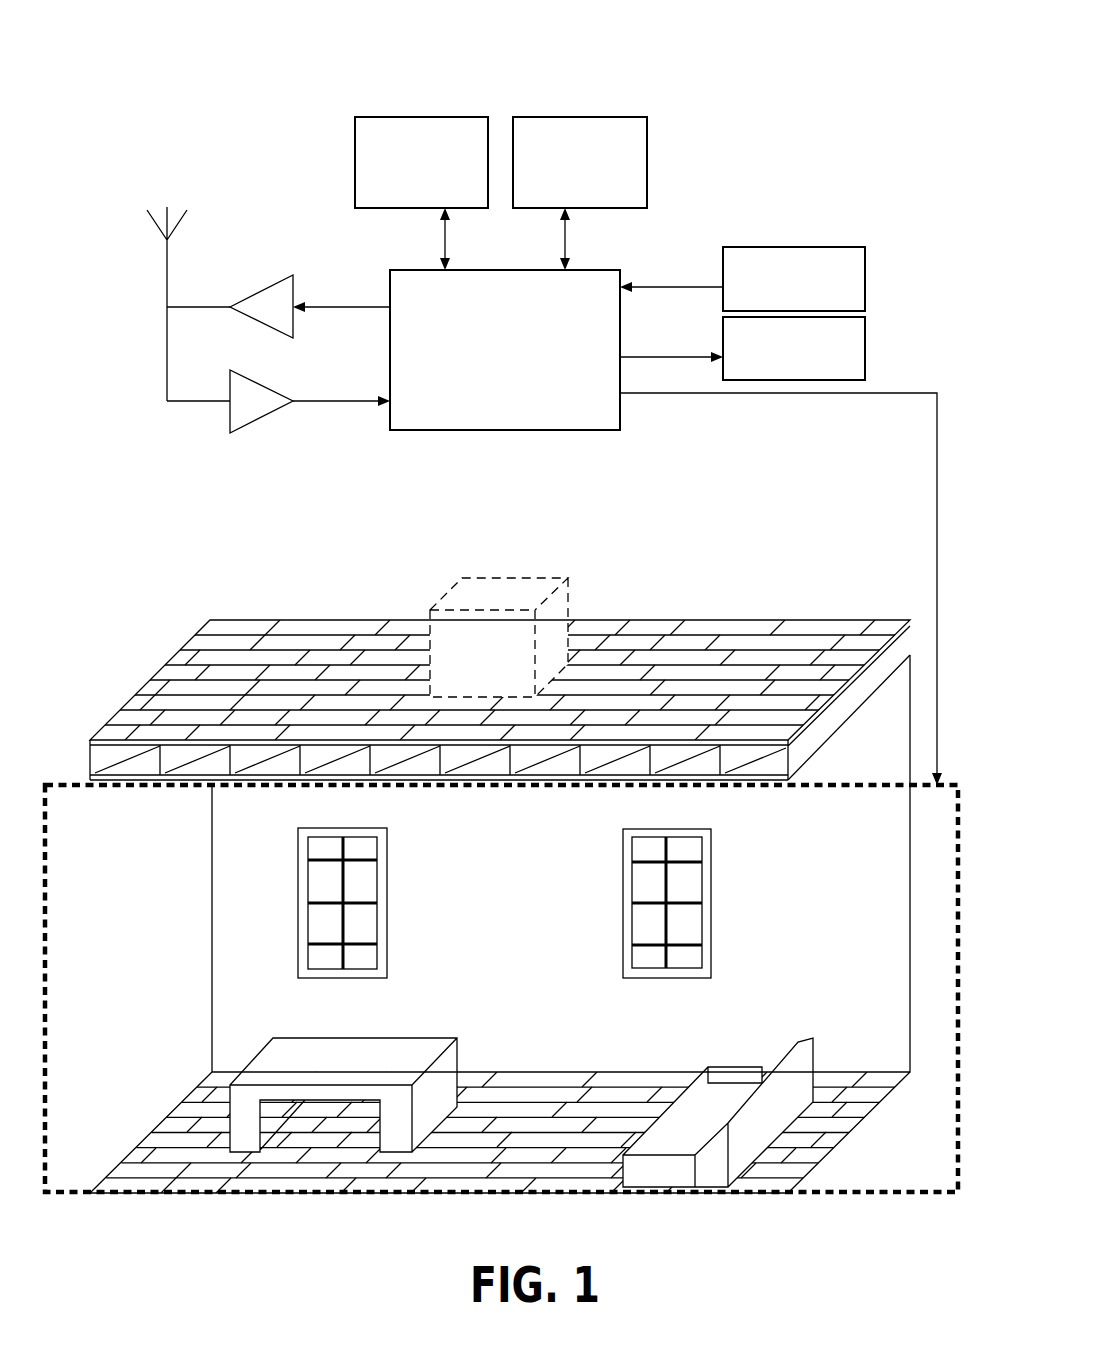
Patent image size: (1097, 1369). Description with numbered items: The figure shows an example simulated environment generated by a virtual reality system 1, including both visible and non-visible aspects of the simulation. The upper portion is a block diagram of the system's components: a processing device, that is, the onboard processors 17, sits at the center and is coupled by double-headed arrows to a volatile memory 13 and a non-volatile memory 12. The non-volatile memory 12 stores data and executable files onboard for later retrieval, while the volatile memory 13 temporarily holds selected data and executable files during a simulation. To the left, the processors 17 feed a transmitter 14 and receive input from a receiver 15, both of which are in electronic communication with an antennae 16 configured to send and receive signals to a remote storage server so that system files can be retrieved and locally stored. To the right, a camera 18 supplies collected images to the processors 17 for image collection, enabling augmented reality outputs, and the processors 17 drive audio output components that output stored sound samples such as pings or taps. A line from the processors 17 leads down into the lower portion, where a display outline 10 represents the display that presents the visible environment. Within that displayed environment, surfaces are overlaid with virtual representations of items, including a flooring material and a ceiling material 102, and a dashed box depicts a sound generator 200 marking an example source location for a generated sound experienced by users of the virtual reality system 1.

The virtual reality system 1 is at (213, 101).
The display 10 is at (501, 973).
The non-volatile memory 12 is at (615, 116).
The volatile memory 13 is at (408, 116).
The transmitter 14 is at (260, 325).
The receiver 15 is at (268, 385).
The antennae 16 is at (157, 227).
The onboard processors 17 is at (443, 431).
The camera 18 is at (865, 282).
The ceiling material 102 is at (822, 768).
The sound generator 200 is at (443, 598).